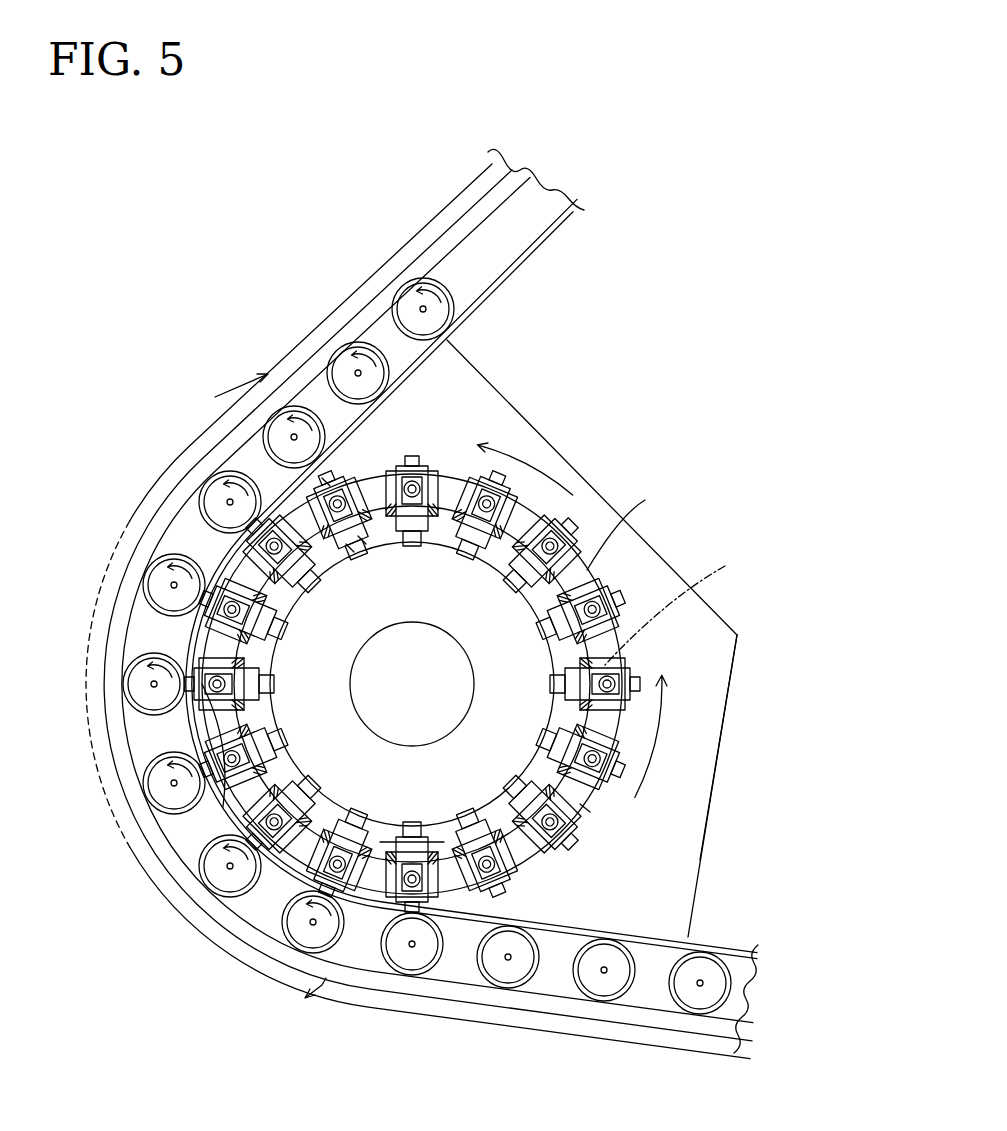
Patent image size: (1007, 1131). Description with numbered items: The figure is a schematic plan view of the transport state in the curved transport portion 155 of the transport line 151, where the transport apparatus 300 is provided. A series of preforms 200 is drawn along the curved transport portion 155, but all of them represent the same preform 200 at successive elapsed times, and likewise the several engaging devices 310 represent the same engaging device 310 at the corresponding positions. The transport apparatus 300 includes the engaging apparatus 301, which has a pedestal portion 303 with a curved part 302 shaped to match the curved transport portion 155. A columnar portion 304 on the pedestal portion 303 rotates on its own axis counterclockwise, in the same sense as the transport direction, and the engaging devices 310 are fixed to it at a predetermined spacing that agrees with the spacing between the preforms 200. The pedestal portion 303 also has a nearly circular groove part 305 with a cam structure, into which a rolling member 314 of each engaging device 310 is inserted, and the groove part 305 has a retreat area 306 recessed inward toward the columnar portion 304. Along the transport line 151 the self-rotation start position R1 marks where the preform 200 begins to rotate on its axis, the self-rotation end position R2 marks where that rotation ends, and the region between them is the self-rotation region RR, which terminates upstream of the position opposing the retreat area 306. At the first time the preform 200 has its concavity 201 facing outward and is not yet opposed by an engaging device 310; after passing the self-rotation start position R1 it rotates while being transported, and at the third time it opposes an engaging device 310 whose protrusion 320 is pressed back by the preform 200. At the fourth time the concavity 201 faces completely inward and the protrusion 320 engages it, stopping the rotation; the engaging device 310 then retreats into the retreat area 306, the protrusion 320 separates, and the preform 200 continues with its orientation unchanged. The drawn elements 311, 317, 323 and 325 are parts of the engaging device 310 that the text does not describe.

The transport line 151 is at (512, 205).
The curved transport portion 155 is at (122, 835).
The preform 200 is at (175, 970).
The concavity 201 is at (262, 430).
The transport apparatus 300 is at (724, 385).
The engaging apparatus 301 is at (692, 562).
The curved part 302 is at (223, 807).
The pedestal portion 303 is at (712, 676).
The columnar portion 304 is at (555, 463).
The groove part 305 is at (637, 527).
The retreat area 306 is at (412, 840).
The engaging device 310 is at (457, 380).
The frame 311 is at (742, 733).
The rolling member 314 is at (686, 608).
The guide 317 is at (362, 540).
The protrusion 320 is at (325, 478).
The slider 323 is at (350, 548).
The roller 325 is at (585, 808).
The self-rotation start position R1 is at (241, 367).
The self-rotation end position R2 is at (316, 1004).
The self-rotation region RR is at (80, 661).